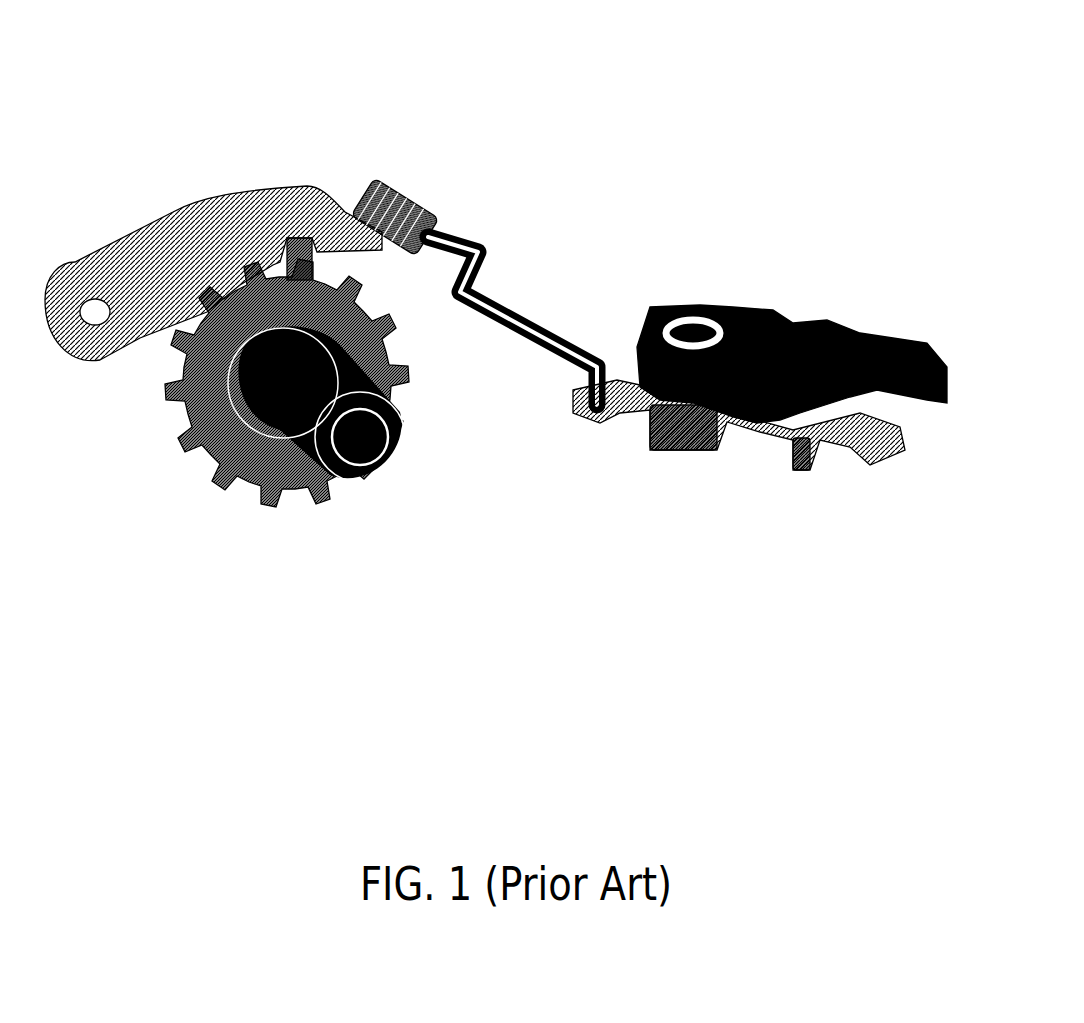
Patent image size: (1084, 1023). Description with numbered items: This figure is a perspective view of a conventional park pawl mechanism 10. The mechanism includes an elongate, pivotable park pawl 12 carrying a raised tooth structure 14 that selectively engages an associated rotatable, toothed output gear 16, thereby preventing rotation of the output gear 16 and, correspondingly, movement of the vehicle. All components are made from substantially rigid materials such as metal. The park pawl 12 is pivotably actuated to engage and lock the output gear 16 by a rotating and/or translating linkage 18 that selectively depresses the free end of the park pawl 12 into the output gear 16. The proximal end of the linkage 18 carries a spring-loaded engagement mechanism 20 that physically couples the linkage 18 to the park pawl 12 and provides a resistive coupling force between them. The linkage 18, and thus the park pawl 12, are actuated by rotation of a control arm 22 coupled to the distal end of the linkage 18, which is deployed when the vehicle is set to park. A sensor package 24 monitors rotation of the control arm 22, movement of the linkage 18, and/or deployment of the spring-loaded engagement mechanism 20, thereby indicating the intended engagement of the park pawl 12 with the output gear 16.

The park pawl mechanism 10 is at (622, 183).
The park pawl 12 is at (232, 182).
The raised tooth structure 14 is at (300, 238).
The output gear 16 is at (325, 505).
The linkage 18 is at (512, 348).
The spring-loaded engagement mechanism 20 is at (410, 187).
The control arm 22 is at (636, 425).
The sensor package 24 is at (787, 308).